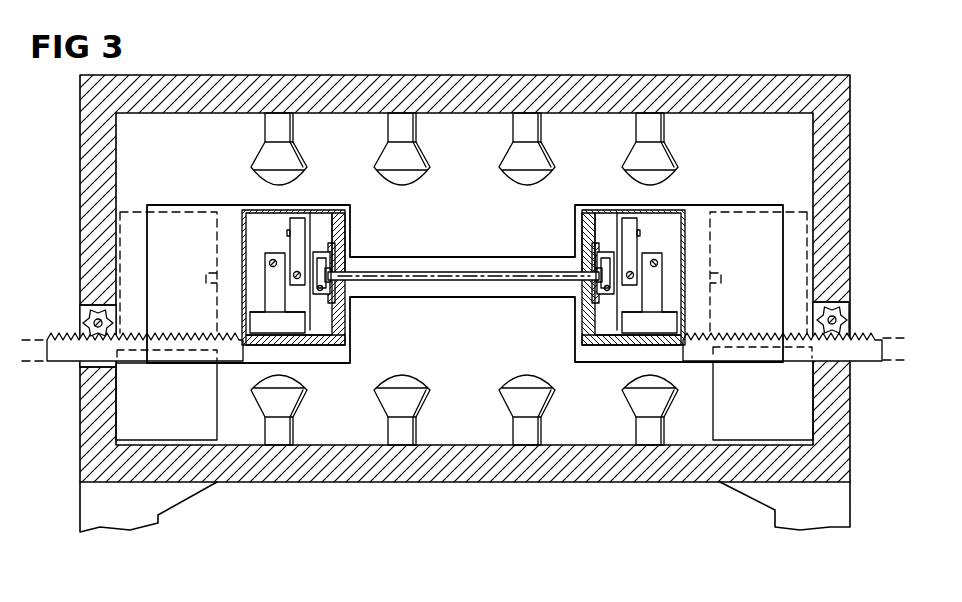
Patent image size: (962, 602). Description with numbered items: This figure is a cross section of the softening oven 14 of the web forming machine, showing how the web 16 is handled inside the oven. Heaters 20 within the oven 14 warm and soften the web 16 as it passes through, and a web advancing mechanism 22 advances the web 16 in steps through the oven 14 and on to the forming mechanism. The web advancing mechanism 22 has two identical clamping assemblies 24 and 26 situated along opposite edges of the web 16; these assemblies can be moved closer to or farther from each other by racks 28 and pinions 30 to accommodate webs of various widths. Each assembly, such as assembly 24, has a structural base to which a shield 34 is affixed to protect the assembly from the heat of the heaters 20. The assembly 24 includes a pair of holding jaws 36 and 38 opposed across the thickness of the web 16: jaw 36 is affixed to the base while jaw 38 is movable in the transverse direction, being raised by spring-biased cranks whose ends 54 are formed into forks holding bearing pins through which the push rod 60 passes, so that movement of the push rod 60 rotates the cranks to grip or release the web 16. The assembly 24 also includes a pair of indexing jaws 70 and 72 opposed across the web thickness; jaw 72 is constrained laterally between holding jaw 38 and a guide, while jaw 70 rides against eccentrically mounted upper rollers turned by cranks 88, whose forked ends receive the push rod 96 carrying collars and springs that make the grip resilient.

The softening oven 14 is at (458, 71).
The web 16 is at (435, 273).
The heaters 20 is at (637, 153).
The web advancing mechanism 22 is at (527, 332).
The clamping assembly 24 is at (227, 202).
The clamping assembly 26 is at (698, 192).
The racks 28 is at (62, 364).
The pinions 30 is at (87, 322).
The shield 34 is at (320, 208).
The holding jaw 36 is at (340, 230).
The holding jaw 38 is at (342, 322).
The ends of cranks 54 is at (270, 290).
The push rod 60 is at (270, 264).
The indexing jaw 70 is at (340, 245).
The indexing jaw 72 is at (340, 303).
The cranks 88 is at (297, 238).
The push rod 96 is at (297, 271).